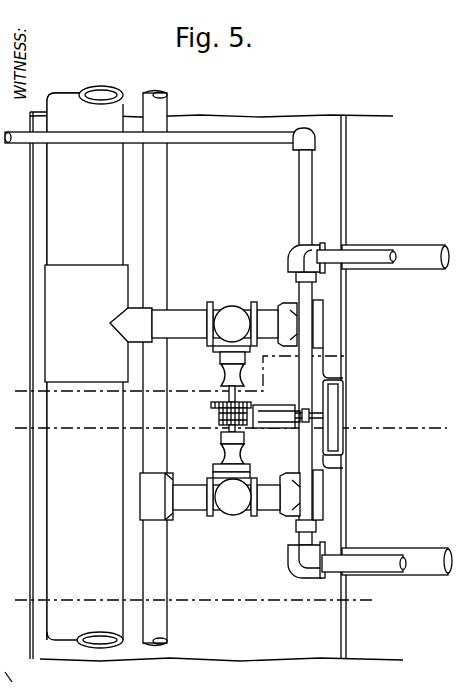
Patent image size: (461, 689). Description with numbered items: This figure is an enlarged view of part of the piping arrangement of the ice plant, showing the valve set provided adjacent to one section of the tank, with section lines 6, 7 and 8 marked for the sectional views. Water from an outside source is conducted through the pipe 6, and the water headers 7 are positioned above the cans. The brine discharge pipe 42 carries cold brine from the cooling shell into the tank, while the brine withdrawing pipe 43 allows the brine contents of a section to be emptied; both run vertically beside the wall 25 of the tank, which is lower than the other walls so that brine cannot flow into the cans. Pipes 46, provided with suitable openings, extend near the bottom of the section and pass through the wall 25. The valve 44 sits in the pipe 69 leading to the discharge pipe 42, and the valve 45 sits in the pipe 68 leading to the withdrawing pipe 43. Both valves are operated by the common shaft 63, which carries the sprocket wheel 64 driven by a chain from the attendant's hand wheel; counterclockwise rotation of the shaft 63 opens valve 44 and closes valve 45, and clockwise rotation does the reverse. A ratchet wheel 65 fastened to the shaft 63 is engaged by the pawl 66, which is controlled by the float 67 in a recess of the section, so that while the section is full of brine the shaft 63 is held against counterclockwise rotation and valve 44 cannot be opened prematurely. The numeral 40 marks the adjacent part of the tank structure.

The pipe 6 is at (193, 140).
The water headers 7 is at (374, 262).
The chamber section 8 is at (30, 319).
The wall of the tank 25 is at (345, 182).
The ground 40 is at (460, 124).
The brine discharge pipe 42 is at (70, 100).
The brine withdrawing pipe 43 is at (166, 104).
The valve 44 is at (222, 364).
The valve 45 is at (222, 455).
The pipe 46 is at (405, 255).
The shaft 63 is at (228, 402).
The sprocket wheel 64 is at (250, 410).
The ratchet wheel 65 is at (222, 416).
The pawl 66 is at (252, 421).
The float 67 is at (343, 400).
The pipe 68 is at (272, 502).
The pipe 69 is at (268, 310).